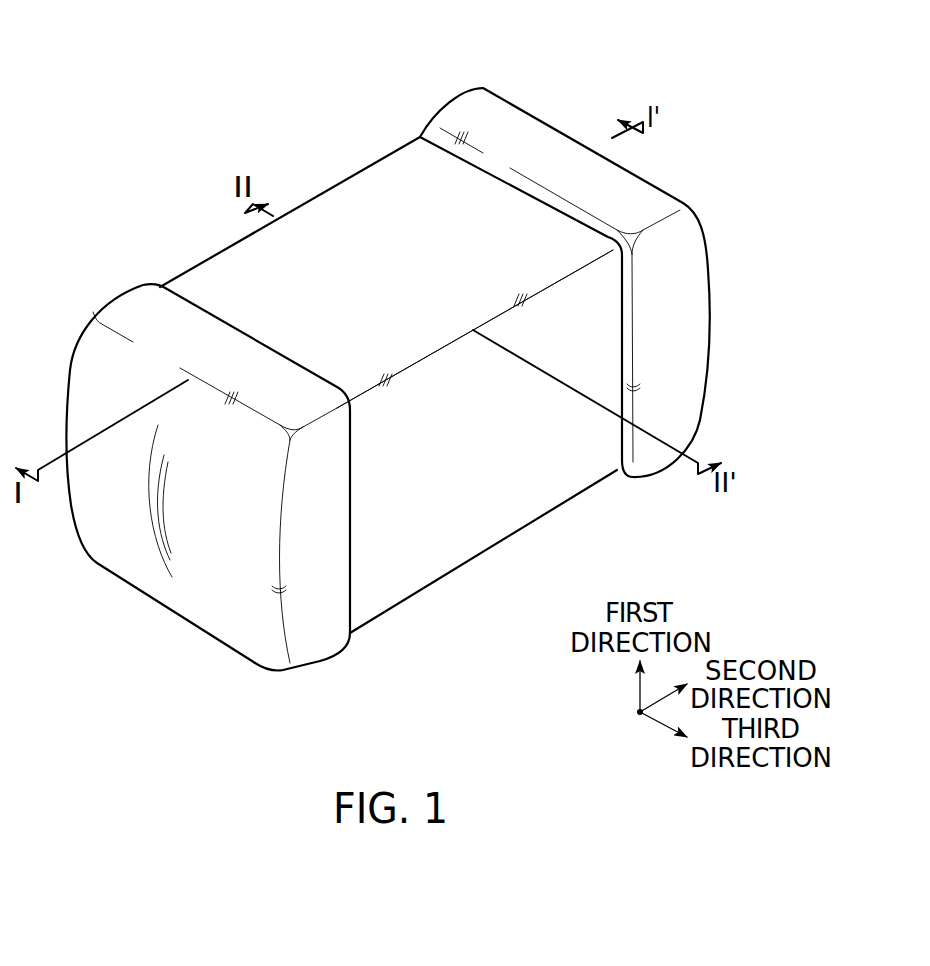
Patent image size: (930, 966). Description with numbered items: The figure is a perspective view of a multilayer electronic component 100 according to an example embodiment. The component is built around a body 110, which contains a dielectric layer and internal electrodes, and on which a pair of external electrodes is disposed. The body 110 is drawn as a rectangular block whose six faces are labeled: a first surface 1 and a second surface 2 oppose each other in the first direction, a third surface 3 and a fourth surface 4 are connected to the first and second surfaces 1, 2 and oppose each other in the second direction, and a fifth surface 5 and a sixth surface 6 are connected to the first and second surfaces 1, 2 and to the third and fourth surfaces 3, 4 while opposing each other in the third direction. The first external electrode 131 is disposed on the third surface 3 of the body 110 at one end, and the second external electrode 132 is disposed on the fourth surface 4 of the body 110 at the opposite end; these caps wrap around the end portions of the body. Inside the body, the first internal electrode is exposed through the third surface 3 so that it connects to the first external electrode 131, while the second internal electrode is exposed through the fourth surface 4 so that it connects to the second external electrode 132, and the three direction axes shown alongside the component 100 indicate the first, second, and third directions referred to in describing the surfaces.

The multilayer electronic component 100 is at (260, 25).
The body 110 is at (324, 205).
The first external electrode 131 is at (122, 300).
The second external electrode 132 is at (467, 102).
The first surface 1 is at (452, 566).
The second surface 2 is at (373, 196).
The third surface 3 is at (136, 561).
The fourth surface 4 is at (554, 139).
The fifth surface 5 is at (216, 255).
The sixth surface 6 is at (510, 496).